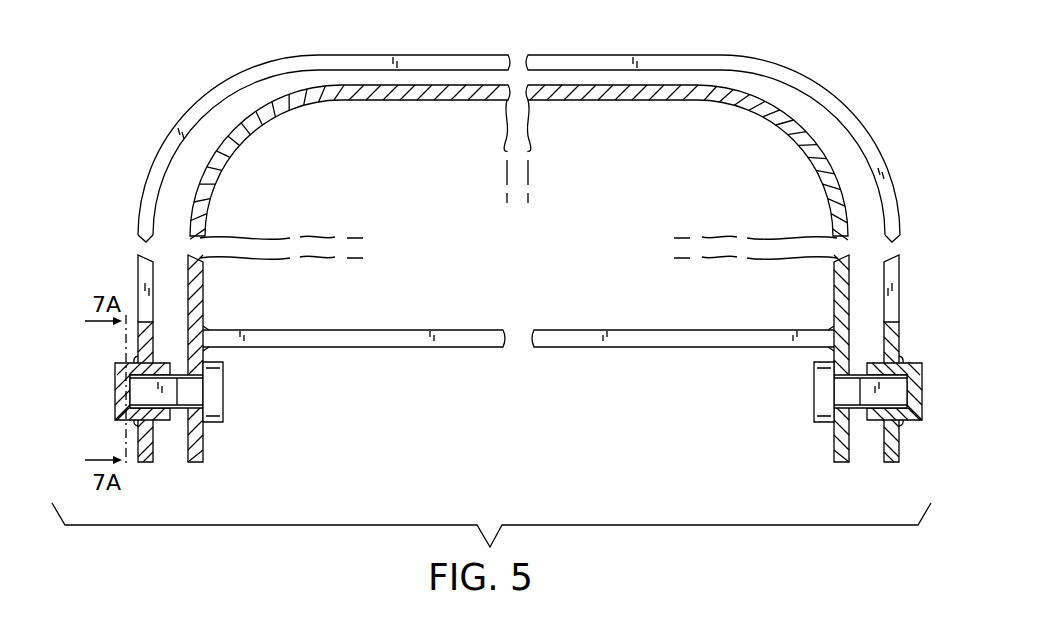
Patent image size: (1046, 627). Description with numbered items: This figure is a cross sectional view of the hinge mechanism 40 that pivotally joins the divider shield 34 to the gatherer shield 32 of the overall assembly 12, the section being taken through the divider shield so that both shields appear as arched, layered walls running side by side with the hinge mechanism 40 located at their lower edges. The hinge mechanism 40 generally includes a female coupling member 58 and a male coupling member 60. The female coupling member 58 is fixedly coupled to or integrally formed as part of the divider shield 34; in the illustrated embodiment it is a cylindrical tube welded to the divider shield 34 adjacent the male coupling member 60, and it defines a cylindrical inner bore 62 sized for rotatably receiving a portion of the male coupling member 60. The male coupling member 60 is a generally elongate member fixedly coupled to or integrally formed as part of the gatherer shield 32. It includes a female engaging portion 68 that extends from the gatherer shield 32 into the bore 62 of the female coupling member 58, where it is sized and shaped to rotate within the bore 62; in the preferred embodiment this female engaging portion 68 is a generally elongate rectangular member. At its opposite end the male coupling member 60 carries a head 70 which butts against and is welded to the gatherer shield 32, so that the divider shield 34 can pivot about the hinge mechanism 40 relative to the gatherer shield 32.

The canopy assembly 12 is at (128, 133).
The divider shield 34 is at (805, 75).
The gatherer shield 32 is at (812, 130).
The hinge mechanism 40 is at (96, 350).
The female coupling member 58 is at (121, 351).
The bore 62 is at (158, 428).
The female engaging portion 68 is at (135, 393).
The male coupling member 60 is at (228, 373).
The head 70 is at (226, 404).